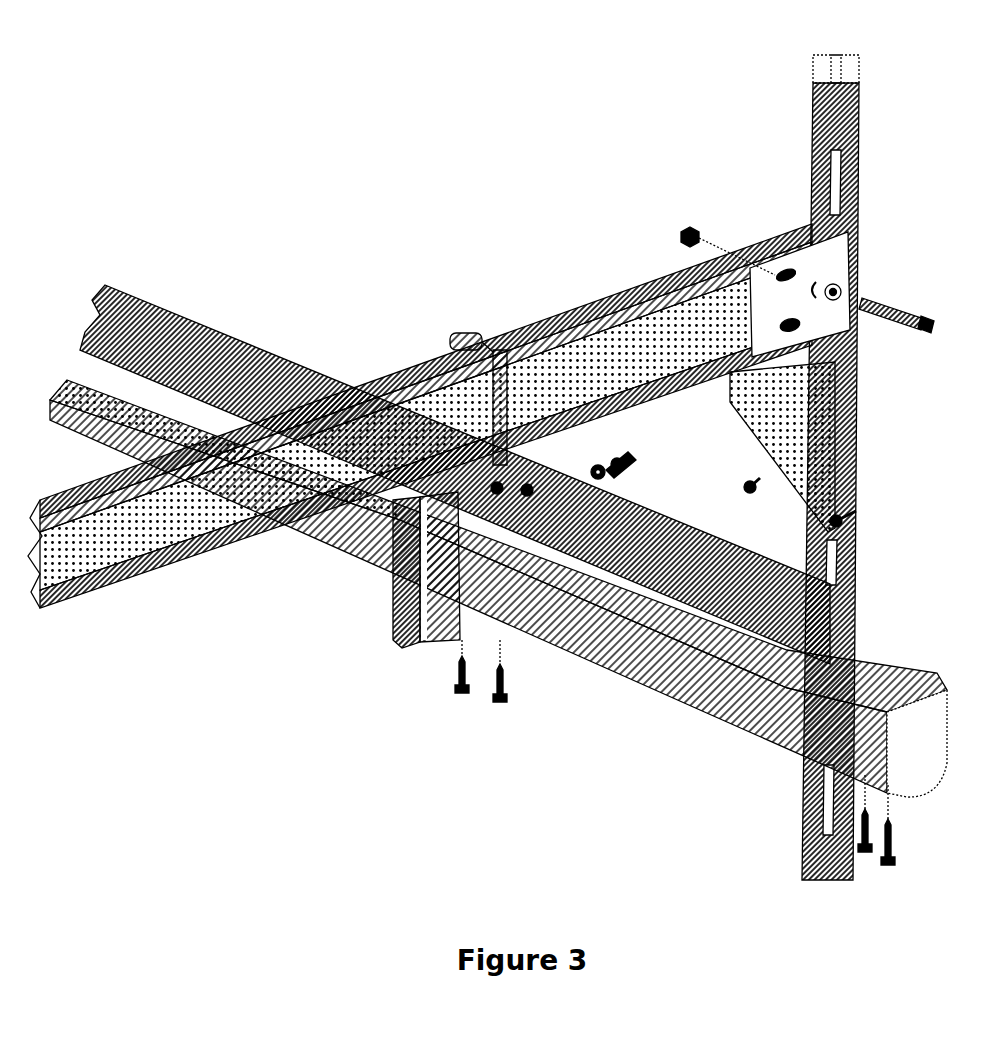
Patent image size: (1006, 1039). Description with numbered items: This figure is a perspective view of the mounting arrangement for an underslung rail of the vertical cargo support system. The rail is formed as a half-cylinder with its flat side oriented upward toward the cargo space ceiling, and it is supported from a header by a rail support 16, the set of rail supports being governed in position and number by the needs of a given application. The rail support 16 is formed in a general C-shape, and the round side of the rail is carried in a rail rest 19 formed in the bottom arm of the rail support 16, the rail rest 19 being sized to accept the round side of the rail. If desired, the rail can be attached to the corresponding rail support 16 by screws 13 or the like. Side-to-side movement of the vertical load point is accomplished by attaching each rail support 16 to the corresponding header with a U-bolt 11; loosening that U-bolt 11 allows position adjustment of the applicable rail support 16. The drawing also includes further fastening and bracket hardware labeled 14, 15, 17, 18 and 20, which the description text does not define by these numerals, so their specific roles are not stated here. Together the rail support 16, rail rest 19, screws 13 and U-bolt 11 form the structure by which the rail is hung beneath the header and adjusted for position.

The U-bolt 11 is at (470, 333).
The screws 13 is at (506, 696).
The washer 14 is at (606, 476).
The mounting plate bolts 15 is at (535, 589).
The rail support 16 is at (750, 492).
The bolt 17 is at (630, 455).
The bolt 18 is at (933, 323).
The rail rest 19 is at (842, 288).
The nut 20 is at (681, 230).